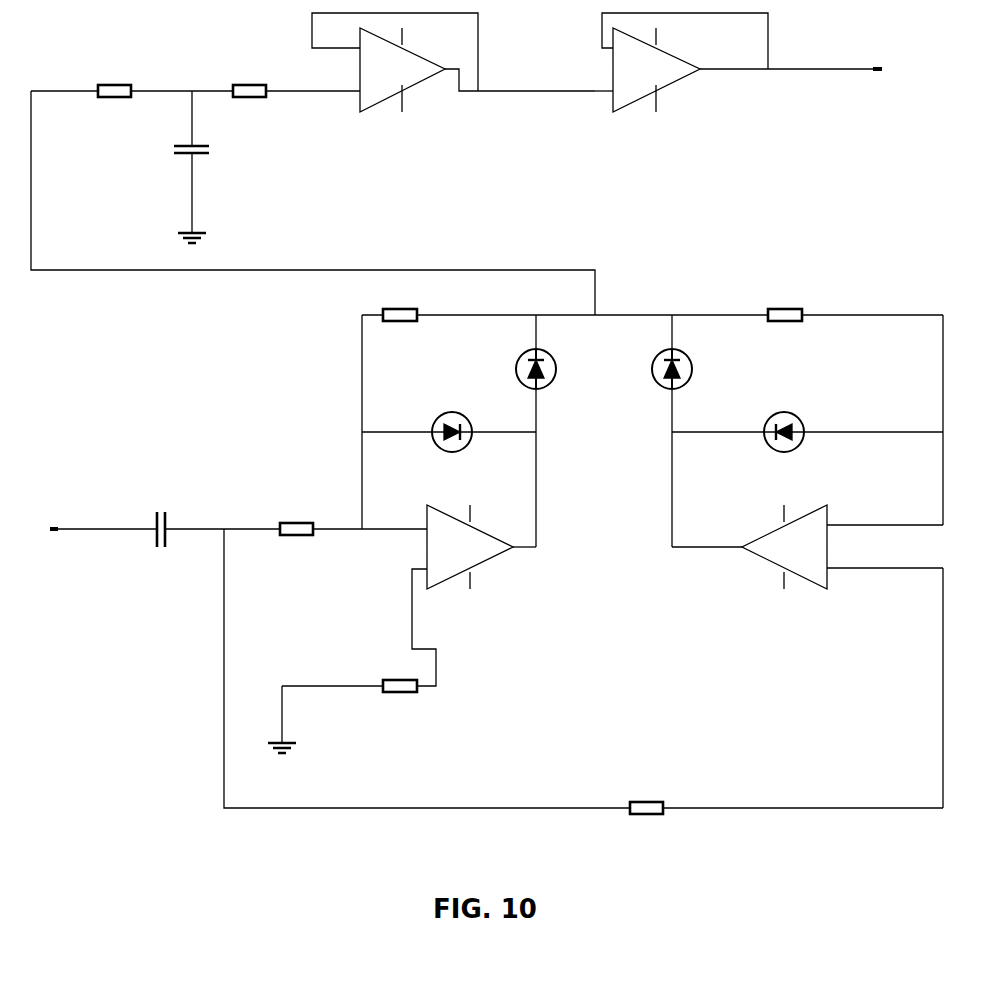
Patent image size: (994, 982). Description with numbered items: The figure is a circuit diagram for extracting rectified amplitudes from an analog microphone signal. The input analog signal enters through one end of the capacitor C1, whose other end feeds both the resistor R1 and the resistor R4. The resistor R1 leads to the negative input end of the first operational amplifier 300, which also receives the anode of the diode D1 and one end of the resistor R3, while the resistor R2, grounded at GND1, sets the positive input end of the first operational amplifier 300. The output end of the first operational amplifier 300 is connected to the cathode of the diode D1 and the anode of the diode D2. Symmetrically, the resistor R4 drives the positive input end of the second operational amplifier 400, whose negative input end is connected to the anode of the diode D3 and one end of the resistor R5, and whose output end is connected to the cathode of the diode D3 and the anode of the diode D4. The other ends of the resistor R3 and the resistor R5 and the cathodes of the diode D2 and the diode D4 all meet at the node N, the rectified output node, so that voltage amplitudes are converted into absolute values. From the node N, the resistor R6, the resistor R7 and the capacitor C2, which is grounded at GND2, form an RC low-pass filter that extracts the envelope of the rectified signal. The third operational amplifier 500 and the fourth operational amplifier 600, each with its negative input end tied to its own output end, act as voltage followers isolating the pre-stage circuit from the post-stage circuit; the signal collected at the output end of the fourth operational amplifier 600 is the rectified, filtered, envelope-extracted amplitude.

The resistor R1 is at (297, 551).
The resistor R2 is at (349, 707).
The resistor R3 is at (398, 336).
The resistor R4 is at (645, 830).
The resistor R5 is at (784, 336).
The resistor R6 is at (114, 112).
The resistor R7 is at (249, 112).
The capacitor C1 is at (159, 552).
The capacitor C2 is at (165, 162).
The diode D1 is at (449, 452).
The diode D2 is at (558, 369).
The diode D3 is at (807, 413).
The diode D4 is at (694, 369).
The first ground GND1 is at (317, 719).
The second ground GND2 is at (235, 225).
The node N is at (652, 299).
The first operational amplifier 300 is at (470, 550).
The second operational amplifier 400 is at (792, 551).
The third operational amplifier 500 is at (395, 78).
The fourth operational amplifier 600 is at (662, 77).